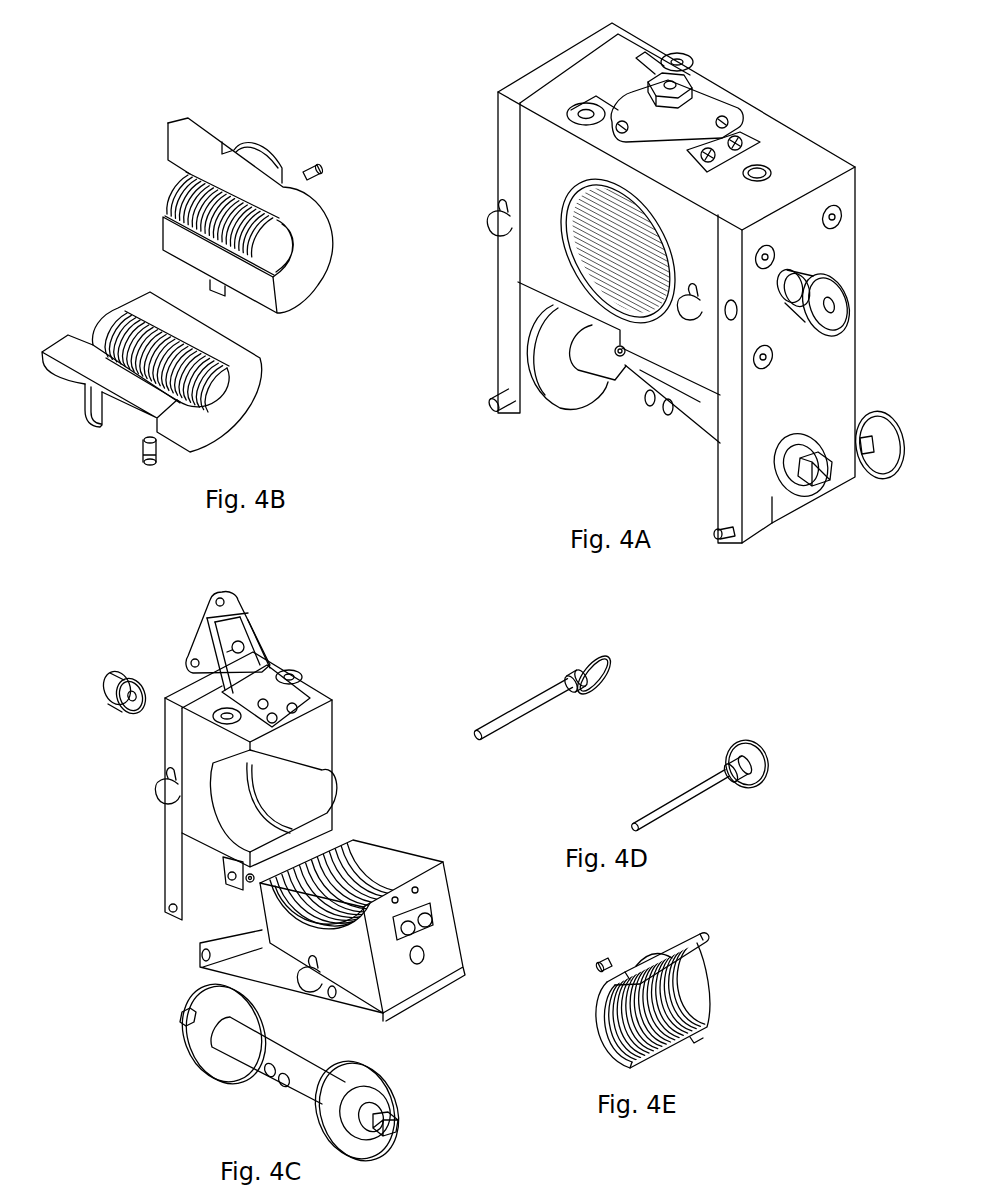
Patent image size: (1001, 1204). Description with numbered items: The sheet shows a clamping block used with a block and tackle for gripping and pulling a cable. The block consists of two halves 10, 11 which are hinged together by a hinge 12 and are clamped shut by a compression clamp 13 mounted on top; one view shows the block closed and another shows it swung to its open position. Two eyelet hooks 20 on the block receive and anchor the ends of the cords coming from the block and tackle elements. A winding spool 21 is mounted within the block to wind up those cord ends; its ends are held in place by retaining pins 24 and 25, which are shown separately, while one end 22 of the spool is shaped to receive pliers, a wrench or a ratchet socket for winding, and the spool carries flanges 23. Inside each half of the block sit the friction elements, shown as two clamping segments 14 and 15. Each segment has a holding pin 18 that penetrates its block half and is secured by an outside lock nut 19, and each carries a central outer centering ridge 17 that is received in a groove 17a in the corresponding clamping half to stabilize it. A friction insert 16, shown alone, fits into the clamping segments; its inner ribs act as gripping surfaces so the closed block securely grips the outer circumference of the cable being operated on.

In FIG. 4A, the clamping block half 10 is at (709, 273).
In FIG. 4C, the clamping block half 10 is at (362, 917).
In FIG. 4A, the clamping block half 11 is at (564, 189).
In FIG. 4C, the clamping block half 11 is at (285, 832).
In FIG. 4A, the hinge 12 is at (617, 357).
In FIG. 4C, the hinge 12 is at (247, 881).
In FIG. 4A, the compression clamp 13 is at (706, 103).
In FIG. 4C, the compression clamp 13 is at (260, 650).
In FIG. 4B, the clamping segment 14 is at (312, 248).
In FIG. 4B, the clamping segment 15 is at (225, 413).
In FIG. 4B, the friction insert 16 is at (120, 312).
In FIG. 4C, the friction insert 16 is at (353, 843).
In FIG. 4E, the friction insert 16 is at (630, 1047).
In FIG. 4B, the ridge 17 is at (245, 140).
In FIG. 4E, the ridge 17 is at (650, 953).
In FIG. 4C, the groove 17a is at (290, 777).
In FIG. 4B, the holding pin 18 is at (314, 166).
In FIG. 4E, the holding pin 18 is at (603, 962).
In FIG. 4A, the lock nut 19 is at (847, 297).
In FIG. 4C, the lock nut 19 is at (112, 708).
In FIG. 4A, the eyelet hook 20 is at (680, 304).
In FIG. 4C, the eyelet hook 20 is at (305, 983).
In FIG. 4A, the winding spool 21 is at (692, 416).
In FIG. 4C, the winding spool 21 is at (293, 1053).
In FIG. 4A, the spool end 22 is at (824, 468).
In FIG. 4C, the spool end 22 is at (398, 1124).
In FIG. 4C, the flange 23 is at (318, 1133).
In FIG. 4A, the retaining pin 24 is at (503, 413).
In FIG. 4D, the retaining pin 24 is at (537, 713).
In FIG. 4A, the retaining pin 25 is at (872, 447).
In FIG. 4D, the retaining pin 25 is at (672, 800).